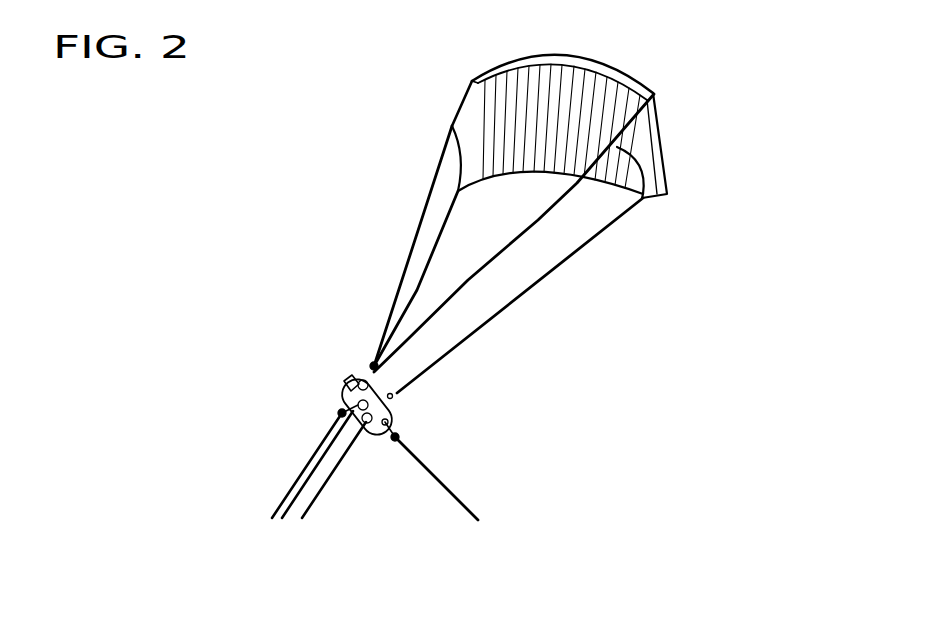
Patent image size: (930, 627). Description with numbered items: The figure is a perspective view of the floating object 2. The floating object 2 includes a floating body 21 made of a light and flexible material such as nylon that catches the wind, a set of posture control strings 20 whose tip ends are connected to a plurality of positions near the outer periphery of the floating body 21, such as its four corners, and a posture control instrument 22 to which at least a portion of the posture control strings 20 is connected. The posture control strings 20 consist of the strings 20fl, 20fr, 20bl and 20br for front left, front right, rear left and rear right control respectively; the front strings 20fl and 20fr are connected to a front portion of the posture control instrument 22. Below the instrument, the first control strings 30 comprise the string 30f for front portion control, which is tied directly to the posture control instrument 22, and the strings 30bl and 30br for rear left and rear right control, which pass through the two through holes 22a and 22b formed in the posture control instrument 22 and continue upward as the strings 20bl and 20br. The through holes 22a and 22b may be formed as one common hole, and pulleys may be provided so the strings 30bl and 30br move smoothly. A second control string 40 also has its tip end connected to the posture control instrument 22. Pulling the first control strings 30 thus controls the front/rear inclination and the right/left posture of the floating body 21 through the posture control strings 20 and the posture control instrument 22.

The floating object 2 is at (382, 137).
The floating body 21 is at (658, 102).
The posture control strings 20 is at (330, 170).
The string for front portion left control 20fl is at (427, 198).
The string for rear portion left control 20bl is at (436, 242).
The string for front portion right control 20fr is at (478, 270).
The string for rear portion right control 20br is at (503, 310).
The posture control instrument 22 is at (347, 385).
The through hole 22a is at (390, 395).
The through hole 22b is at (390, 417).
The first control strings 30 is at (230, 378).
The string for front portion control 30f is at (330, 430).
The string for rear portion left control 30bl is at (320, 458).
The string for rear portion right control 30br is at (312, 495).
The second control string 40 is at (452, 492).